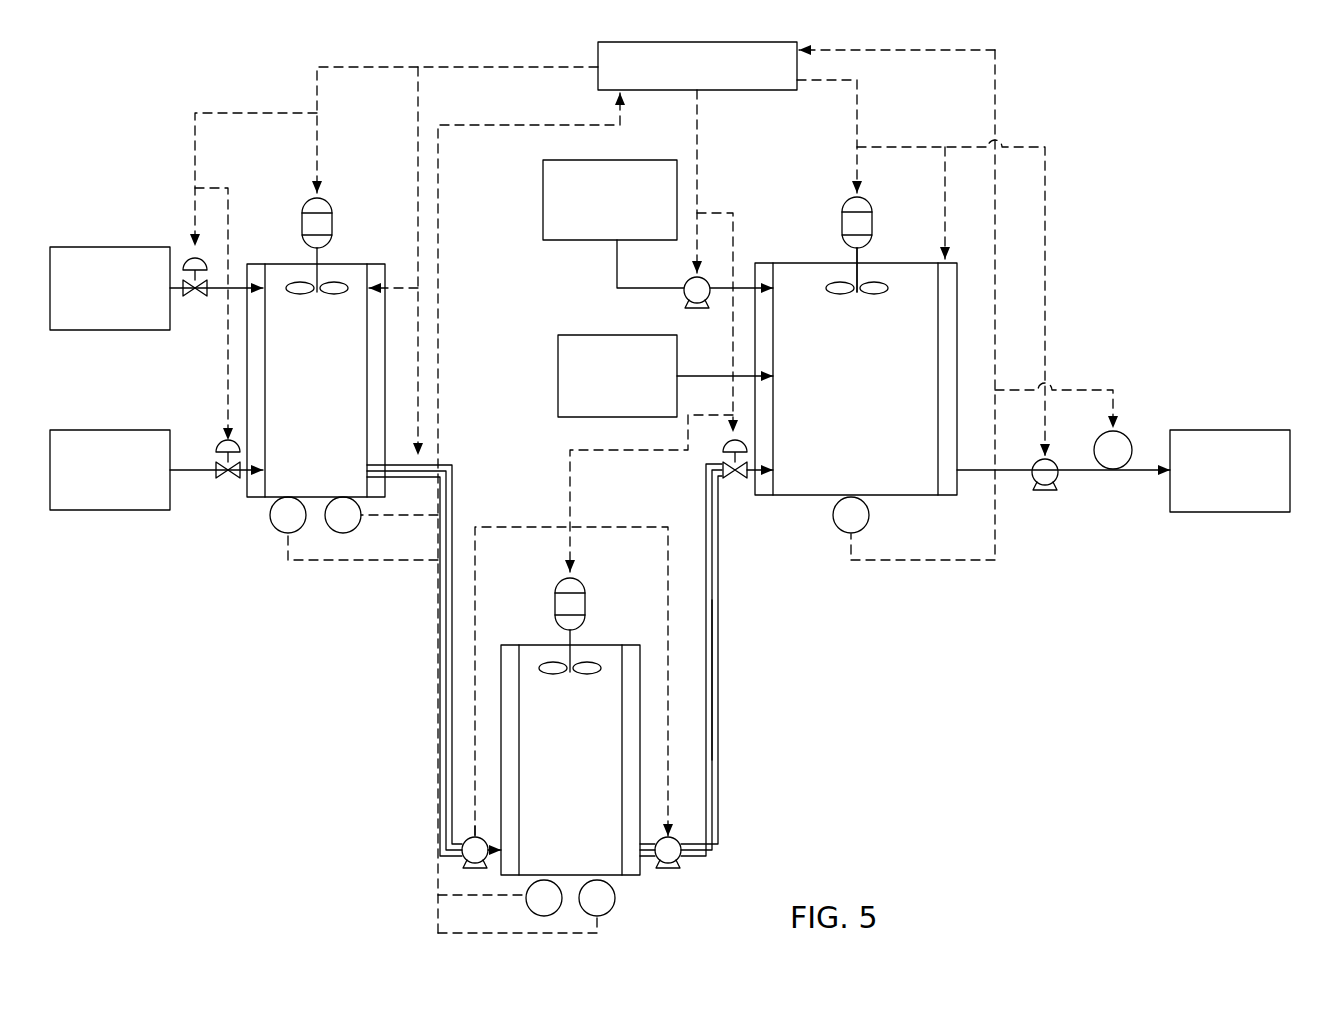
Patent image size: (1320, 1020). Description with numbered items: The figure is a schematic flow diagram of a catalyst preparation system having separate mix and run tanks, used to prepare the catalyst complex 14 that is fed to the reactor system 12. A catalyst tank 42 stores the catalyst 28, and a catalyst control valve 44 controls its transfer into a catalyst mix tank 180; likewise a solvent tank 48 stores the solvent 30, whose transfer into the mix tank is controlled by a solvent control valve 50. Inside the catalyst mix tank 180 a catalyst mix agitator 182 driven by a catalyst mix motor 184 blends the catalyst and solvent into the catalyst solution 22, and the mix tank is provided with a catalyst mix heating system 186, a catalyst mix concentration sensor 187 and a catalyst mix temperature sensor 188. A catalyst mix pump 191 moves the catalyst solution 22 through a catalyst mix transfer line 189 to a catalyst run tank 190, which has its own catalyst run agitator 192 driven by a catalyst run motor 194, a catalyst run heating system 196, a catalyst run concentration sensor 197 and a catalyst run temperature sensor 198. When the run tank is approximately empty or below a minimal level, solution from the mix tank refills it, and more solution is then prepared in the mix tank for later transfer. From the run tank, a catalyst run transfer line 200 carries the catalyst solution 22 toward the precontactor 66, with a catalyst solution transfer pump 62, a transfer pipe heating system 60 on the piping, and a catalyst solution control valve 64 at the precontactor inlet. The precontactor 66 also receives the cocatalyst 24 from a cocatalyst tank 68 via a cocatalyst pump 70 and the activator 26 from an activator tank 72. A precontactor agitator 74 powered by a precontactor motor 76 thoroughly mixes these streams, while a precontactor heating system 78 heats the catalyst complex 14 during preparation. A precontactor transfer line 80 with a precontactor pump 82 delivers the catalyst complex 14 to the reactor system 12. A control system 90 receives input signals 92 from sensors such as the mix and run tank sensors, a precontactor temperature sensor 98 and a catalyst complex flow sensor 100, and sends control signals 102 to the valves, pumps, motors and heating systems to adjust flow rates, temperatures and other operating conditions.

The reactor system 12 is at (1235, 432).
The catalyst complex 14 is at (766, 500).
The catalyst solution 22 is at (258, 498).
The cocatalyst 24 is at (610, 245).
The activator 26 is at (608, 420).
The catalyst 28 is at (100, 330).
The solvent 30 is at (100, 510).
The catalyst tank 42 is at (72, 250).
The catalyst control valve 44 is at (192, 258).
The solvent tank 48 is at (80, 432).
The solvent control valve 50 is at (222, 448).
The transfer pipe heating system 60 is at (440, 760).
The catalyst solution transfer pump 62 is at (676, 868).
The catalyst solution control valve 64 is at (722, 468).
The precontactor 66 is at (864, 264).
The cocatalyst tank 68 is at (624, 162).
The cocatalyst pump 70 is at (688, 287).
The activator tank 72 is at (588, 337).
The precontactor agitator 74 is at (848, 298).
The precontactor motor 76 is at (846, 204).
The precontactor heating system 78 is at (760, 268).
The precontactor transfer line 80 is at (982, 470).
The precontactor pump 82 is at (1050, 492).
The control system 90 is at (690, 44).
The input signals 92 is at (607, 125).
The precontactor temperature sensor 98 is at (844, 533).
The catalyst complex flow sensor 100 is at (1122, 438).
The control signals 102 is at (576, 67).
The catalyst mix tank 180 is at (346, 268).
The catalyst mix agitator 182 is at (305, 296).
The catalyst mix motor 184 is at (310, 205).
The catalyst mix heating system 186 is at (252, 268).
The catalyst mix concentration sensor 187 is at (282, 535).
The catalyst mix temperature sensor 188 is at (355, 530).
The catalyst mix transfer line 189 is at (438, 690).
The catalyst run tank 190 is at (596, 650).
The catalyst mix pump 191 is at (462, 862).
The catalyst run agitator 192 is at (560, 678).
The catalyst run motor 194 is at (562, 588).
The catalyst run heating system 196 is at (505, 650).
The catalyst run concentration sensor 197 is at (530, 910).
The catalyst run temperature sensor 198 is at (614, 912).
The catalyst run transfer line 200 is at (718, 690).